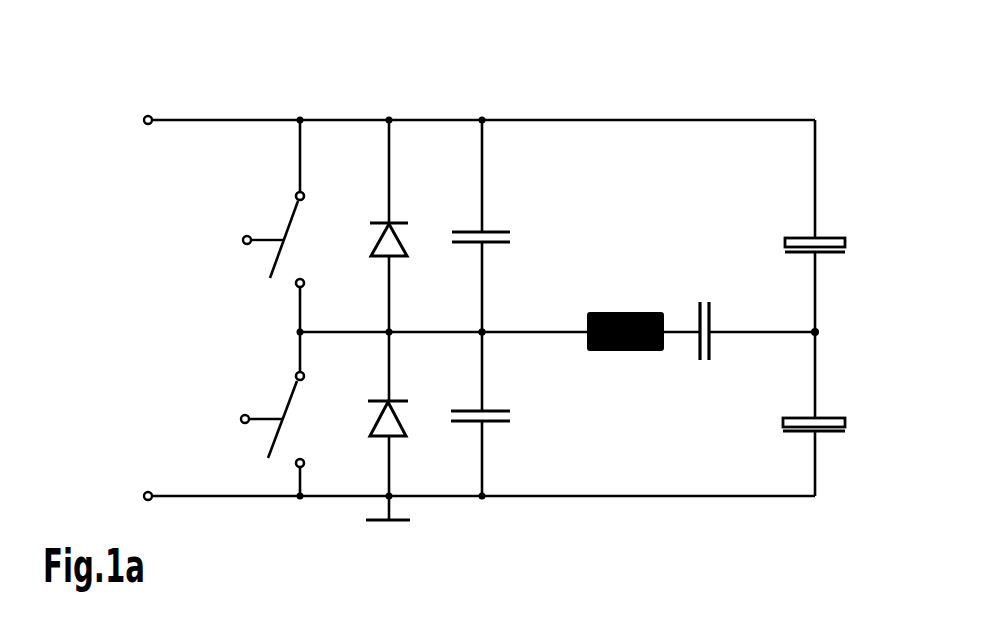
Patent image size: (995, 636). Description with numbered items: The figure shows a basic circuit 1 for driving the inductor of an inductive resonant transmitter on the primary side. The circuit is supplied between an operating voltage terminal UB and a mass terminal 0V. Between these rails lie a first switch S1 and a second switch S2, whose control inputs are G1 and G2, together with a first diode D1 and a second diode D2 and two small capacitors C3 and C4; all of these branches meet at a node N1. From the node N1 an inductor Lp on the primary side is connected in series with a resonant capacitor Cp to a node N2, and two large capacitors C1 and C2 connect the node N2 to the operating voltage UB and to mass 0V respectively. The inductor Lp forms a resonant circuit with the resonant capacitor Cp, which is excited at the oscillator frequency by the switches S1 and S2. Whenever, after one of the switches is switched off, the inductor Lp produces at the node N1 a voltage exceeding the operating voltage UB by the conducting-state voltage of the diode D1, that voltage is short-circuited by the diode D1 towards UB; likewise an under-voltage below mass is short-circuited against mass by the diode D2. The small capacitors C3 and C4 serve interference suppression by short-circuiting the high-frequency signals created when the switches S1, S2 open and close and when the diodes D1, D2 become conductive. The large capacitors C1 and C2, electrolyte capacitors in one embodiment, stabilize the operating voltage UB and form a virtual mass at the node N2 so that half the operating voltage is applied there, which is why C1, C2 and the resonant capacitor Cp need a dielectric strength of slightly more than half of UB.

The circuit arrangement 1 is at (624, 53).
The operating voltage UB is at (134, 121).
The ground terminal 0V is at (126, 496).
The first switch S1 is at (300, 226).
The second switch S2 is at (299, 414).
The first gate control input G1 is at (249, 242).
The second gate control input G2 is at (247, 421).
The first diode D1 is at (404, 226).
The second diode D2 is at (401, 426).
The large capacitor C1 is at (831, 241).
The large capacitor C2 is at (830, 421).
The small capacitor C3 is at (498, 226).
The small capacitor C4 is at (497, 414).
The node N1 is at (499, 315).
The node N2 is at (831, 317).
The inductor on the primary side Lp is at (625, 315).
The resonant capacitor Cp is at (721, 320).